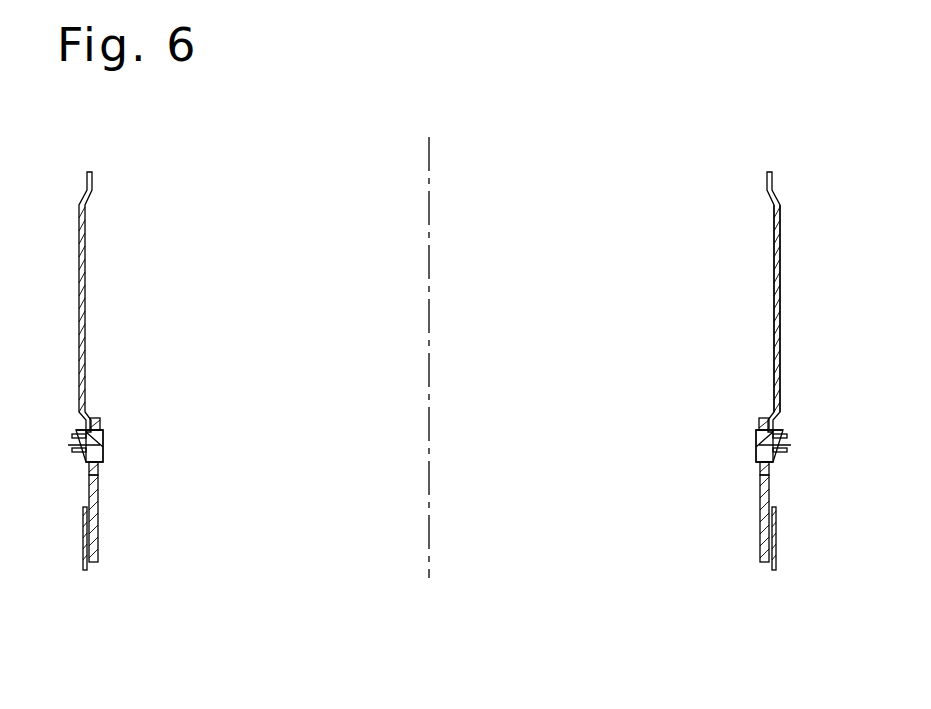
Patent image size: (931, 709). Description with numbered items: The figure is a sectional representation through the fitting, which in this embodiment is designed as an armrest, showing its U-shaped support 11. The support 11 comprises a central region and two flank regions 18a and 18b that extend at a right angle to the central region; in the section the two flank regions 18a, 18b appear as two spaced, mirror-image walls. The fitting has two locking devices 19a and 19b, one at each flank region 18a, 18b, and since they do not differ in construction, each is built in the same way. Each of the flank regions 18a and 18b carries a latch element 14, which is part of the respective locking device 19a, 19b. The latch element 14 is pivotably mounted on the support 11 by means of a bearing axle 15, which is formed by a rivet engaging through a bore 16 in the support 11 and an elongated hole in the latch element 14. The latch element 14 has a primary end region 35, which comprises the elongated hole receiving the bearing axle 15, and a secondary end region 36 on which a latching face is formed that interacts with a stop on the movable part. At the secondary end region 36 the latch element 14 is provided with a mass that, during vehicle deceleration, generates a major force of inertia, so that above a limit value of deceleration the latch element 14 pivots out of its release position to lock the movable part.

The support 11 is at (777, 218).
The latch element 14 is at (95, 518).
The bearing axle 15 is at (115, 441).
The bore 16 is at (70, 427).
The flank region 18a is at (763, 268).
The flank region 18b is at (100, 253).
The locking device 19a is at (746, 494).
The locking device 19b is at (141, 448).
The primary end region 35 is at (96, 407).
The secondary end region 36 is at (97, 579).